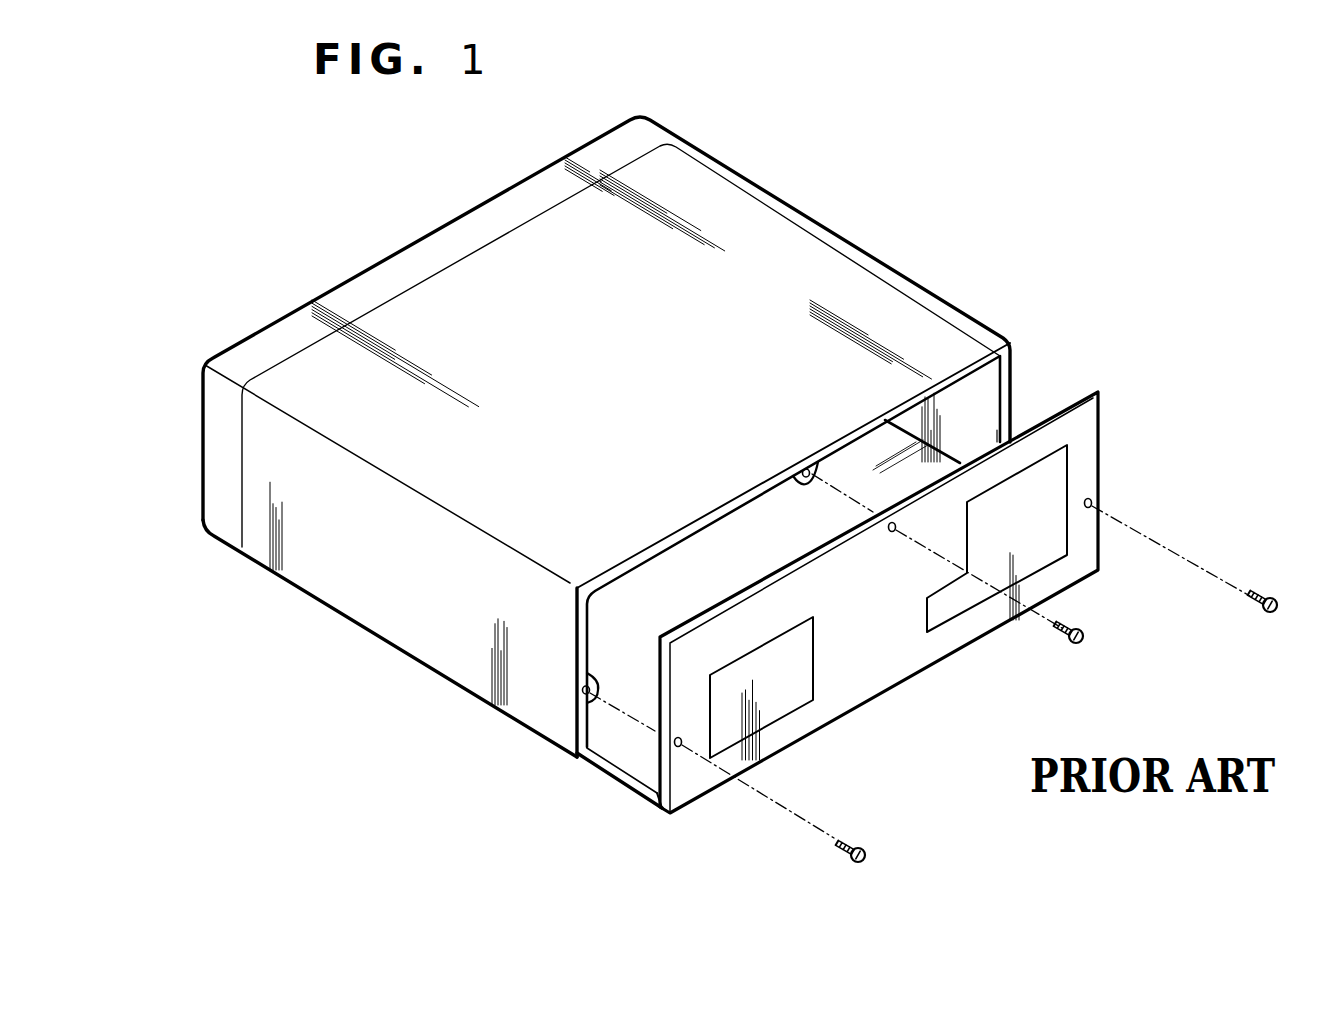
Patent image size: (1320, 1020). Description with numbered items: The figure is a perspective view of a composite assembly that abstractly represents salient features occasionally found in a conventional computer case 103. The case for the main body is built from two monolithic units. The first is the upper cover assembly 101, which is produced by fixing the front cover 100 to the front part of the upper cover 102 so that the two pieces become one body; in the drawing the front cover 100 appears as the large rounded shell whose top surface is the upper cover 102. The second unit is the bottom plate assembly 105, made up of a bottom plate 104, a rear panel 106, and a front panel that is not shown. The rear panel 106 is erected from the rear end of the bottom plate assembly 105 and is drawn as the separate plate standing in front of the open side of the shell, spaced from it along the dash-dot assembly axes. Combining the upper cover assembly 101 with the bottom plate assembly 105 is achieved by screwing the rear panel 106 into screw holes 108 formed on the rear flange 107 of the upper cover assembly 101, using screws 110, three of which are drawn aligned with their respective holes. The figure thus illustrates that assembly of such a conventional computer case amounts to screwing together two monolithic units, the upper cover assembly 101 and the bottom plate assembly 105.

The front cover 100 is at (288, 340).
The upper cover assembly 101 is at (727, 153).
The upper cover 102 is at (808, 262).
The electronic apparatus 103 is at (1141, 79).
The bottom plate 104 is at (643, 742).
The bottom plate assembly 105 is at (670, 819).
The rear panel 106 is at (893, 645).
The rear flange 107 is at (1012, 382).
The screw holes 108 is at (582, 675).
The screws 110 is at (848, 842).